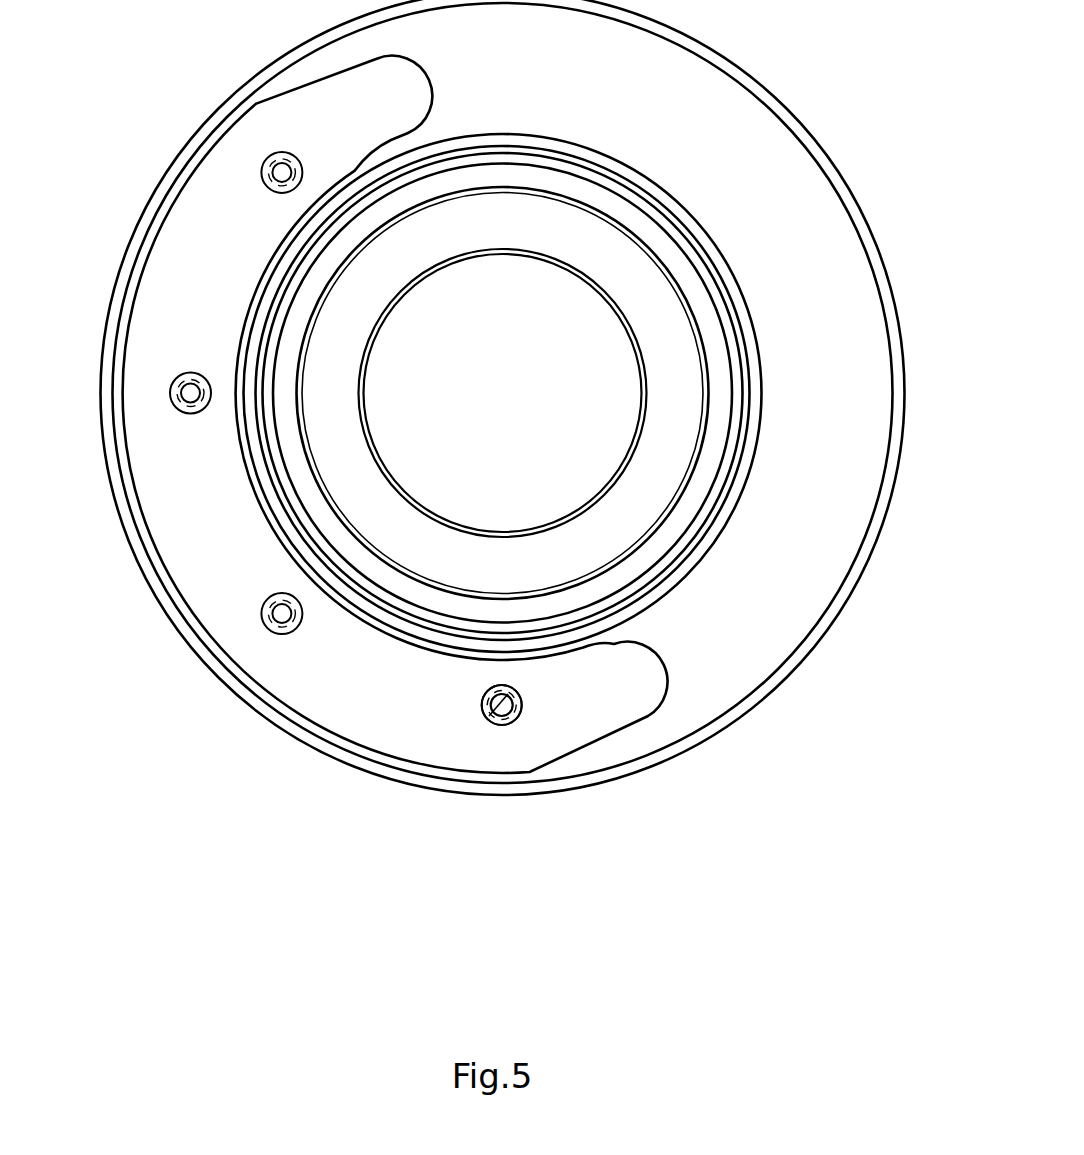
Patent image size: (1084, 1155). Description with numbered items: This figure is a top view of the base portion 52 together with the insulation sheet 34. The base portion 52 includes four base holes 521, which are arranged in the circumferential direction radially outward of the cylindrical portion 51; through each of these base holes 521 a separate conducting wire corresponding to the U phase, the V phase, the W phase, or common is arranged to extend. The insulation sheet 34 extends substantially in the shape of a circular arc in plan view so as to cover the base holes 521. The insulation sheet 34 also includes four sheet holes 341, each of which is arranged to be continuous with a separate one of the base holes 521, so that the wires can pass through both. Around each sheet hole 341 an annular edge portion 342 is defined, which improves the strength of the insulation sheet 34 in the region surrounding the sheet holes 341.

The insulation sheet 34 is at (332, 693).
The sheet hole 341 is at (489, 718).
The annular edge portion 342 is at (513, 720).
The cylindrical portion 51 is at (598, 240).
The base portion 52 is at (762, 595).
The base hole 521 is at (523, 705).